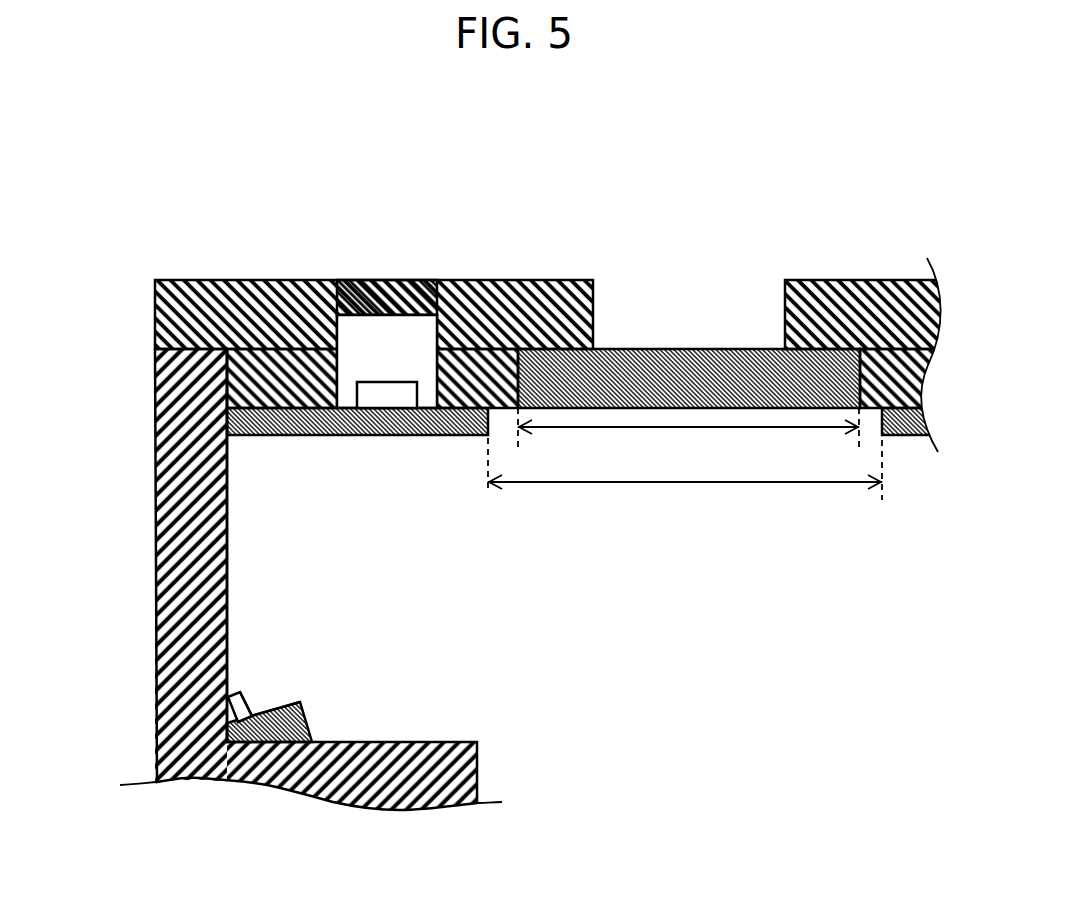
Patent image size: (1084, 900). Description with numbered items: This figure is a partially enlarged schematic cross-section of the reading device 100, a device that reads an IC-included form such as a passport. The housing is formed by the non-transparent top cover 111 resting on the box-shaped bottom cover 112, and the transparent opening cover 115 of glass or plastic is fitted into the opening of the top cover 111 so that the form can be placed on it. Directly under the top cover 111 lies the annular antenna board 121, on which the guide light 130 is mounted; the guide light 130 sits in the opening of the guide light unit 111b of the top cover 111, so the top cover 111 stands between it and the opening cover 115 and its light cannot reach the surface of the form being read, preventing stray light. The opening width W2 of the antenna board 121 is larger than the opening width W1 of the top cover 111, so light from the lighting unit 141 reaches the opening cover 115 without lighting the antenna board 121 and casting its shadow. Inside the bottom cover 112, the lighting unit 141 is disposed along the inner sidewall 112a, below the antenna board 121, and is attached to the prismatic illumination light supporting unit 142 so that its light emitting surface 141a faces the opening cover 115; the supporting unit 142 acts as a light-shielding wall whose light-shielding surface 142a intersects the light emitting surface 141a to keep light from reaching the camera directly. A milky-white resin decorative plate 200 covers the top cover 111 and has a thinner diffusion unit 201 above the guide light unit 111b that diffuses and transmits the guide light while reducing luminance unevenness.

The reading device 100 is at (117, 250).
The top cover 111 is at (462, 367).
The guide light unit 111b is at (357, 338).
The bottom cover 112 is at (152, 520).
The inner sidewall 112a is at (172, 582).
The opening cover 115 is at (690, 372).
The antenna board 121 is at (295, 422).
The guide light 130 is at (395, 400).
The lighting unit 141 is at (239, 696).
The light emitting surface 141a is at (273, 710).
The illumination light supporting unit 142 is at (287, 723).
The light-shielding surface 142a is at (288, 700).
The decorative plate 200 is at (236, 290).
The diffusion unit 201 is at (386, 297).
The opening width of top cover W1 is at (688, 439).
The opening width of antenna board W2 is at (685, 481).